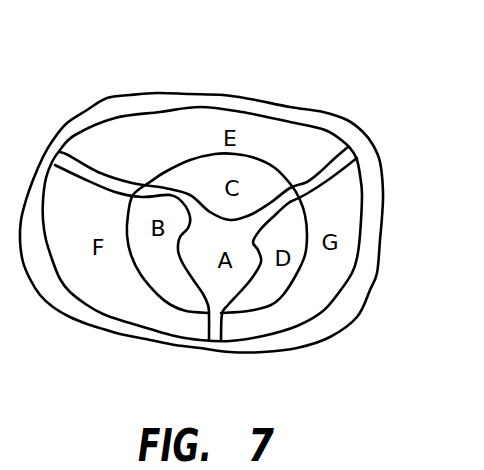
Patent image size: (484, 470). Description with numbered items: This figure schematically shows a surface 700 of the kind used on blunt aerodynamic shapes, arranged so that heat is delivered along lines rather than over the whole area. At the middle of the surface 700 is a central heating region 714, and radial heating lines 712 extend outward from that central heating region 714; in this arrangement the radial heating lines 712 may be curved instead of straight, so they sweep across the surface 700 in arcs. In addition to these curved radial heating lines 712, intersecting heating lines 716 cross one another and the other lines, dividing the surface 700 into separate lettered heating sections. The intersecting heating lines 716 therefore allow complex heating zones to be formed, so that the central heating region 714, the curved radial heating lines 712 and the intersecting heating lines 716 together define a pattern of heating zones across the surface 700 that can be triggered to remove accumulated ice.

The surface 700 is at (123, 88).
The radial heating lines 712 is at (343, 167).
The central heating region 714 is at (249, 277).
The intersecting heating lines 716 is at (173, 295).